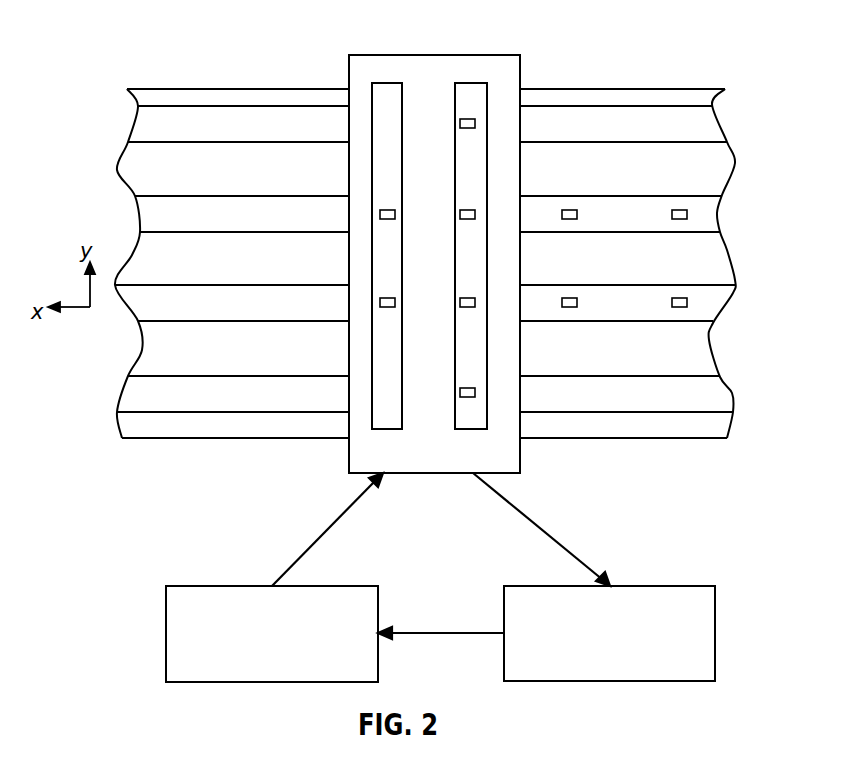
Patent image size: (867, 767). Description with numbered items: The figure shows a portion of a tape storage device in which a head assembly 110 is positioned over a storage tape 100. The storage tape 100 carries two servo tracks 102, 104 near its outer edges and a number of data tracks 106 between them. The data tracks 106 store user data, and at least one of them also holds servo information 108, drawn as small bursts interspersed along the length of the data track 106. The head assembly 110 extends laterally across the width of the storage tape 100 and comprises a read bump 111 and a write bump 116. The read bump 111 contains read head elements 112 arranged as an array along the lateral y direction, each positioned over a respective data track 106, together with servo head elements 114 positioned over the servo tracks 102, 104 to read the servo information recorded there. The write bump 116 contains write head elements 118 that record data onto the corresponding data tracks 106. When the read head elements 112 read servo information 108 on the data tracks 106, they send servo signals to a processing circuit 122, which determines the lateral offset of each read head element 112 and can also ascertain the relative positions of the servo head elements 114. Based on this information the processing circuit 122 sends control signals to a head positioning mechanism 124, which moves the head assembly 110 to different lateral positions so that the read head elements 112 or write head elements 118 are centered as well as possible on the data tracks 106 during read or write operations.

The storage tape 100 is at (595, 88).
The servo track 102 is at (652, 105).
The servo track 104 is at (618, 395).
The data tracks 106 is at (705, 280).
The servo information 108 is at (575, 207).
The head assembly 110 is at (435, 53).
The read bump 111 is at (473, 430).
The read head elements 112 is at (472, 207).
The servo head elements 114 is at (472, 117).
The write bump 116 is at (387, 430).
The write head elements 118 is at (385, 207).
The processing circuit 122 is at (643, 586).
The head positioning mechanism 124 is at (250, 586).